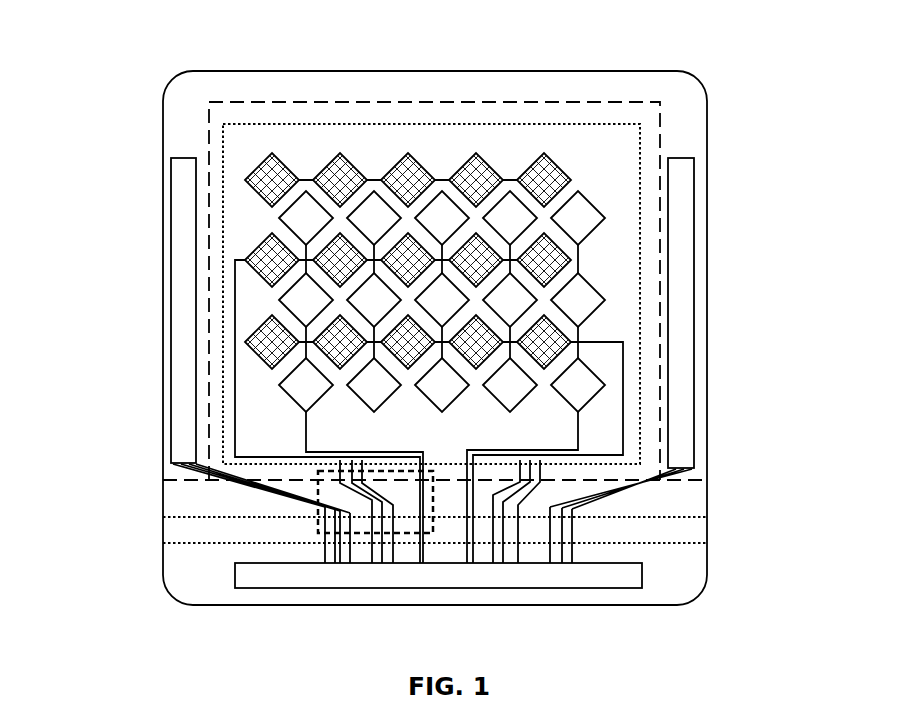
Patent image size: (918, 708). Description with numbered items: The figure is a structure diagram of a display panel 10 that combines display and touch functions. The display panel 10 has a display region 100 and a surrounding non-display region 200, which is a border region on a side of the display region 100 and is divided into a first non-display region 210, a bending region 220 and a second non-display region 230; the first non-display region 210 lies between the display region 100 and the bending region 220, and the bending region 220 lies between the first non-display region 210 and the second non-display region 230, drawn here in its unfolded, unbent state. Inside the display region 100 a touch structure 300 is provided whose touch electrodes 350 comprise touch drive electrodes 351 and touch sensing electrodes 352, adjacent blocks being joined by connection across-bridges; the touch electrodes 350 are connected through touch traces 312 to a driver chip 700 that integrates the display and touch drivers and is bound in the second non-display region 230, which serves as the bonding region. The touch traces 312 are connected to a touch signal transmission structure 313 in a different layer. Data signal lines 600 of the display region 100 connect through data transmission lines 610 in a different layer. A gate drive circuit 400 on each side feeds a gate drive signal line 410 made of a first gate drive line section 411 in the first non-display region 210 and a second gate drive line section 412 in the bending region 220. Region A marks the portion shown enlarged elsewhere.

The display panel 10 is at (148, 9).
The display region 100 is at (617, 100).
The non-display region 200 is at (702, 412).
The first non-display region 210 is at (665, 503).
The bending region 220 is at (675, 523).
The second non-display region 230 is at (513, 600).
The touch structure 300 is at (533, 124).
The touch electrodes 350 is at (524, 272).
The touch drive electrodes 351 is at (603, 152).
The touch sensing electrodes 352 is at (593, 207).
The gate drive circuit 400 is at (392, 360).
The gate drive signal line 410 is at (190, 470).
The first gate drive line section 411 is at (250, 485).
The second gate drive line section 412 is at (318, 530).
The data signal lines 600 is at (429, 450).
The data transmission lines 610 is at (358, 500).
The touch traces 312 is at (423, 497).
The touch signal transmission structure 313 is at (423, 523).
The driver chip 700 is at (642, 577).
The region A is at (330, 538).